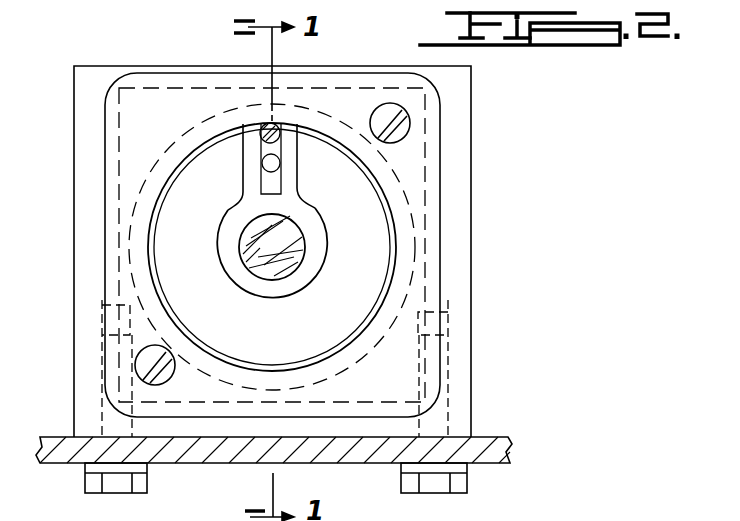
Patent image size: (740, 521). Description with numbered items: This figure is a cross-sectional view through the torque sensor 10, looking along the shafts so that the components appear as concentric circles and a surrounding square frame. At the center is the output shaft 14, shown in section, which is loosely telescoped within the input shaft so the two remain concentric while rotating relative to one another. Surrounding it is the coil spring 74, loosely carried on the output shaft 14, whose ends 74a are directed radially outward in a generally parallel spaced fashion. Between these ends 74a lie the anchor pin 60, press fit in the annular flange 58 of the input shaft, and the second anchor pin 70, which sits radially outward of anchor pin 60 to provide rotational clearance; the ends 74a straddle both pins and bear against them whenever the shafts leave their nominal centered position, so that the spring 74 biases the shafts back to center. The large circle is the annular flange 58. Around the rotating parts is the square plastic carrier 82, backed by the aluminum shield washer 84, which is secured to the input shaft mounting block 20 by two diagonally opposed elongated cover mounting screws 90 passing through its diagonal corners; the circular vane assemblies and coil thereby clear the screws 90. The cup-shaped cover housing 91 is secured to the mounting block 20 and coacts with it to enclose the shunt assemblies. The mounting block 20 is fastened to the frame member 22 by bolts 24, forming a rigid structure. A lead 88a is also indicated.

The torque sensor 10 is at (489, 102).
The output shaft 14 is at (287, 252).
The input shaft mounting block 20 is at (455, 180).
The frame member 22 is at (490, 441).
The bolts 24 is at (140, 485).
The annular flange 58 is at (337, 331).
The anchor pin 60 is at (276, 171).
The second anchor pin 70 is at (243, 137).
The coil spring 74 is at (242, 287).
The ends of coil spring 74a is at (240, 182).
The plastic carrier 82 is at (118, 207).
The aluminum shield washer 84 is at (248, 323).
The lead 88a is at (600, 507).
The cover mounting screws 90 is at (402, 131).
The cover housing 91 is at (108, 153).